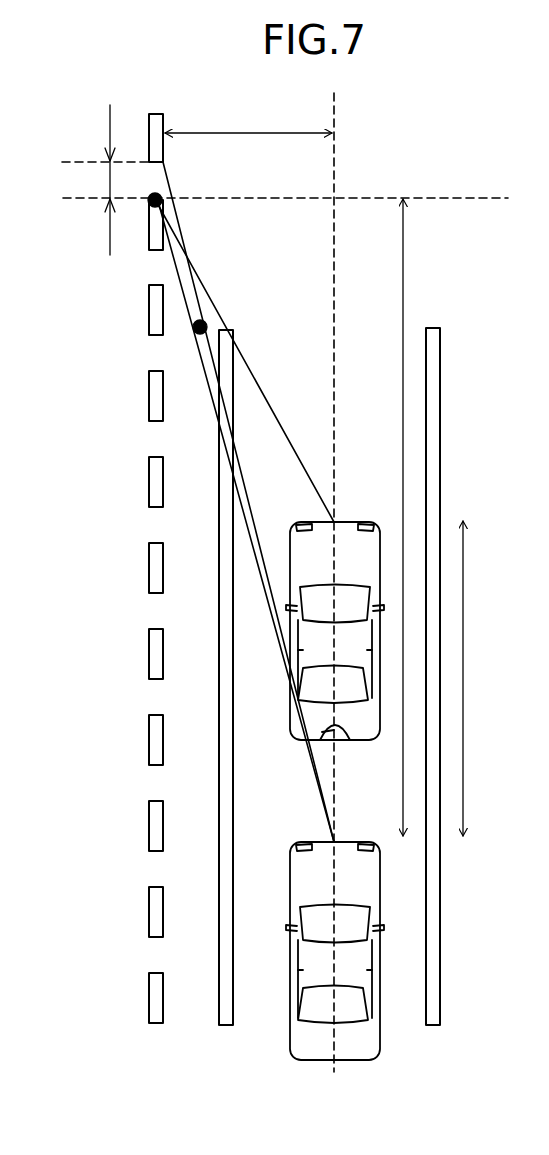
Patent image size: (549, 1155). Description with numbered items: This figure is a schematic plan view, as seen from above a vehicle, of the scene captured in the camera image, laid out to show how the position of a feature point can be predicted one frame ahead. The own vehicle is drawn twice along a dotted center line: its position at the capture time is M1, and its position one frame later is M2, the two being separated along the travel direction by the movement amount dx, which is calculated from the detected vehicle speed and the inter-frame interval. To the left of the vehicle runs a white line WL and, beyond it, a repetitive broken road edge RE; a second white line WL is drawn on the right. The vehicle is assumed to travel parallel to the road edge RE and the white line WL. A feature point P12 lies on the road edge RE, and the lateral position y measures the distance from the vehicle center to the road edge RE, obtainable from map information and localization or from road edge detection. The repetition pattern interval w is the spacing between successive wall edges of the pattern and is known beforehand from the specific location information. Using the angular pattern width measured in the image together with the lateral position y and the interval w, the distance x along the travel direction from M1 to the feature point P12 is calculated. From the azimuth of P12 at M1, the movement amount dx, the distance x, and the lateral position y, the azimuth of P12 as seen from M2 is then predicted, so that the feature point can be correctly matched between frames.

The feature point P12 is at (150, 207).
The vehicle position one frame after M2 is at (302, 739).
The vehicle position at time t11 M1 is at (304, 1062).
The road edge RE is at (156, 1025).
The white line WL is at (225, 1026).
The repetition pattern interval w is at (95, 180).
The distance along the travel direction x is at (413, 517).
The lateral position y is at (248, 150).
The movement amount of the vehicle dx is at (480, 678).